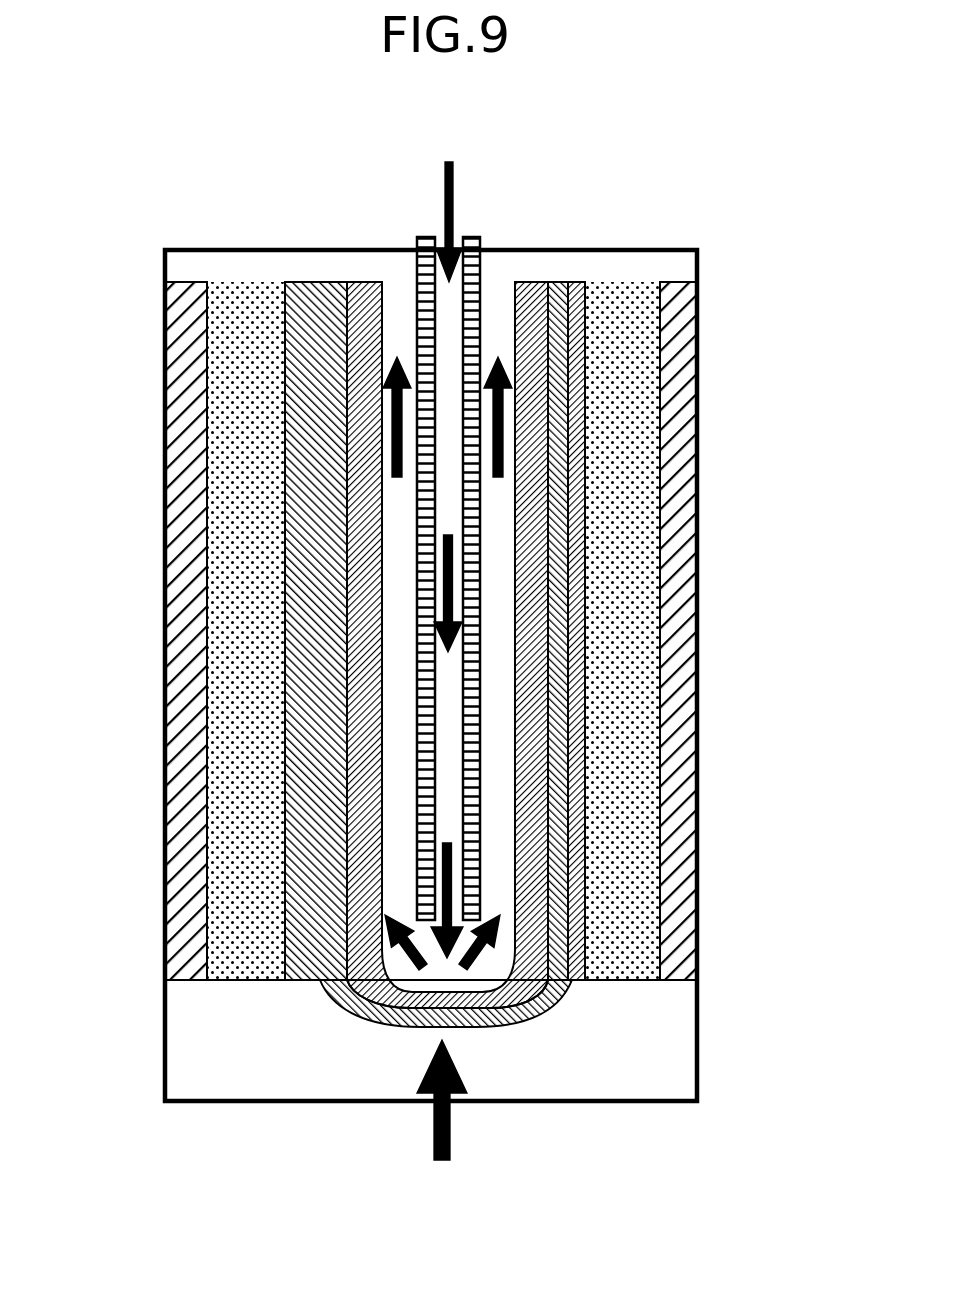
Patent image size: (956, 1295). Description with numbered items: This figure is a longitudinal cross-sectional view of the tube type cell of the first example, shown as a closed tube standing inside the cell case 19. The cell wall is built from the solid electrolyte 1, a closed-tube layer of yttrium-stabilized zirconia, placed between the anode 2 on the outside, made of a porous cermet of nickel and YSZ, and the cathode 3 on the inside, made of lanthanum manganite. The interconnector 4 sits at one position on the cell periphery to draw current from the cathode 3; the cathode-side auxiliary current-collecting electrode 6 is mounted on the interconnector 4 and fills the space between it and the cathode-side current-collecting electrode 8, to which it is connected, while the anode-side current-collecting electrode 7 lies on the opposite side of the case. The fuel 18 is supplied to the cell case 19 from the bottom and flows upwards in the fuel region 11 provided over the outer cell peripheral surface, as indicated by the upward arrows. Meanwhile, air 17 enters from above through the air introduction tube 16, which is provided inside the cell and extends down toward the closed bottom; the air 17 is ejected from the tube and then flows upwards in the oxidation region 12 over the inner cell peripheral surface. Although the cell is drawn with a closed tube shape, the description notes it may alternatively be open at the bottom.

The solid electrolyte 1 is at (560, 282).
The anode 2 is at (602, 282).
The cathode 3 is at (533, 282).
The interconnector 4 is at (316, 282).
The cathode-side auxiliary current-collecting electrode 6 is at (230, 663).
The anode-side current-collecting electrode 7 is at (697, 522).
The cathode-side current-collecting electrode 8 is at (165, 522).
The fuel region 11 is at (625, 863).
The oxidation region 12 is at (480, 973).
The air introduction tube 16 is at (422, 252).
The air 17 is at (455, 172).
The fuel 18 is at (450, 1117).
The cell case 19 is at (697, 1015).